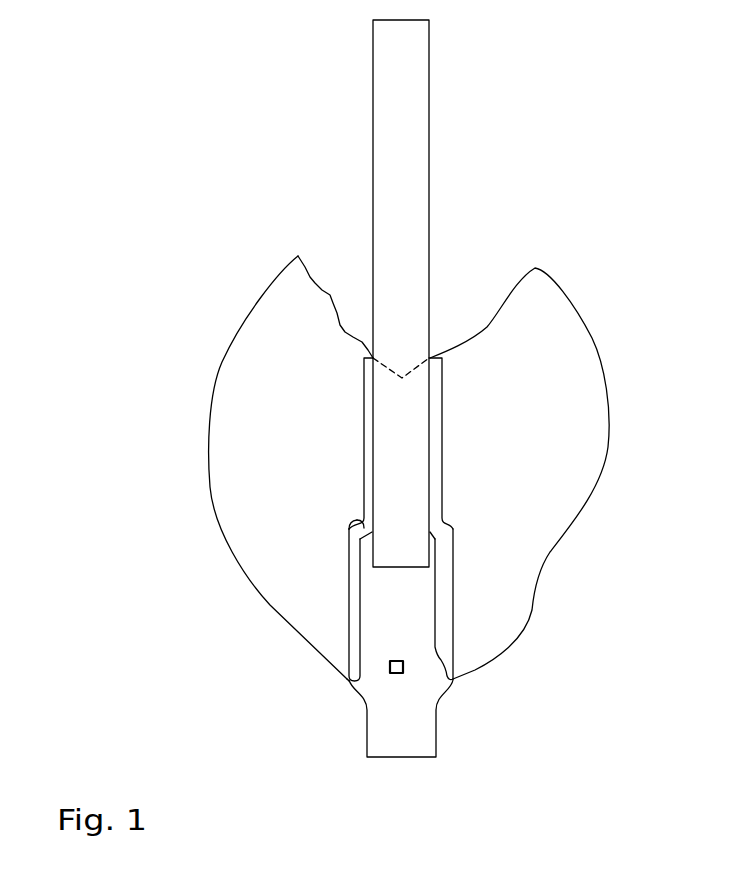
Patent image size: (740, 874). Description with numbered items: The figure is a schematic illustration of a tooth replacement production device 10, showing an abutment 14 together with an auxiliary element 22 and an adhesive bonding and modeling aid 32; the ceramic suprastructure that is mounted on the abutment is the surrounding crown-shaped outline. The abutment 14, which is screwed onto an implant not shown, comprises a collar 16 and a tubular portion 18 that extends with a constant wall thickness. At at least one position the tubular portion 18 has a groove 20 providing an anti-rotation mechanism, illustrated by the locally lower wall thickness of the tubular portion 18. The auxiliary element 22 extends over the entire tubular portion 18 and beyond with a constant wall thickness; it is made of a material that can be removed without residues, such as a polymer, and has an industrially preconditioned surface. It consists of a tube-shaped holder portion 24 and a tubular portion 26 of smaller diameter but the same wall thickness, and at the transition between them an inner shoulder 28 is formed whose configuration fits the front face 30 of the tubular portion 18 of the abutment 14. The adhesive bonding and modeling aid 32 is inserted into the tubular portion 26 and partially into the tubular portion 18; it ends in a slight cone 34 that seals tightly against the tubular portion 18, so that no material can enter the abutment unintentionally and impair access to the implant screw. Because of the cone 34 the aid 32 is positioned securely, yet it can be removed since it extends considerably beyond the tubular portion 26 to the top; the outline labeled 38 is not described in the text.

The tooth replacement production device 10 is at (552, 88).
The abutment 14 is at (418, 738).
The collar 16 is at (346, 683).
The tubular portion 18 is at (418, 613).
The groove 20 is at (449, 586).
The auxiliary element 22 is at (367, 403).
The holder portion 24 is at (446, 635).
The tubular portion 26 is at (433, 402).
The inner shoulder 28 is at (350, 528).
The front face 30 is at (364, 520).
The adhesive bonding and modeling aid 32 is at (413, 160).
The cone 34 is at (388, 549).
The second resilient flap 38 is at (596, 435).